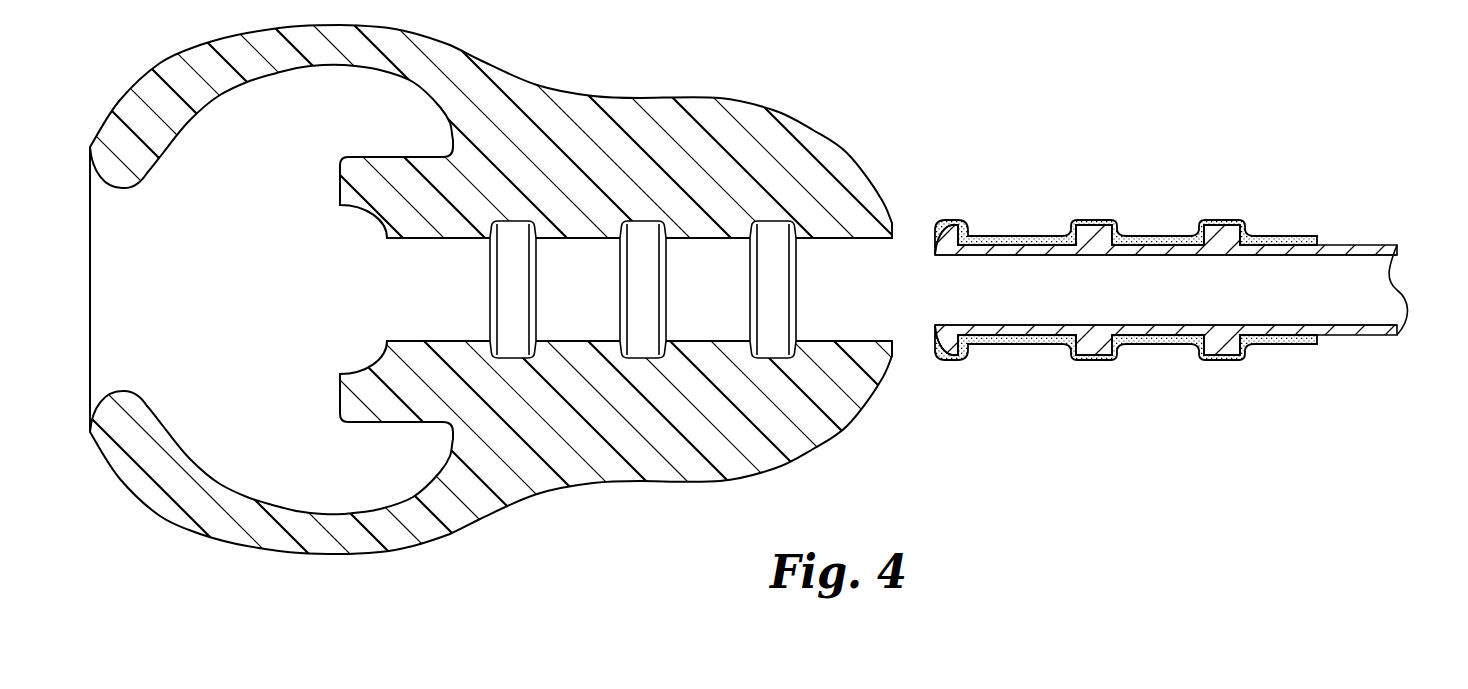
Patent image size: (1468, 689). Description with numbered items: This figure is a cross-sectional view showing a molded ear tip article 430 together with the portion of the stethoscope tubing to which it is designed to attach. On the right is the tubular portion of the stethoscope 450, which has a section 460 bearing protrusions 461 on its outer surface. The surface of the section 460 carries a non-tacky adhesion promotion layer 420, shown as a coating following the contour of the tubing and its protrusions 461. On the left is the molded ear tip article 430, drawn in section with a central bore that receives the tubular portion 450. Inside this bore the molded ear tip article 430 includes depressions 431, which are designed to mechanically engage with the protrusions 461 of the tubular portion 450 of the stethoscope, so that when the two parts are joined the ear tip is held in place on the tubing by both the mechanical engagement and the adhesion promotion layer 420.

The molded ear tip article 430 is at (770, 68).
The depressions 431 is at (643, 233).
The tubular portion of the stethoscope 450 is at (1364, 210).
The section 460 is at (1032, 203).
The non-tacky adhesion promotion layer 420 is at (1088, 227).
The protrusions 461 is at (1227, 237).